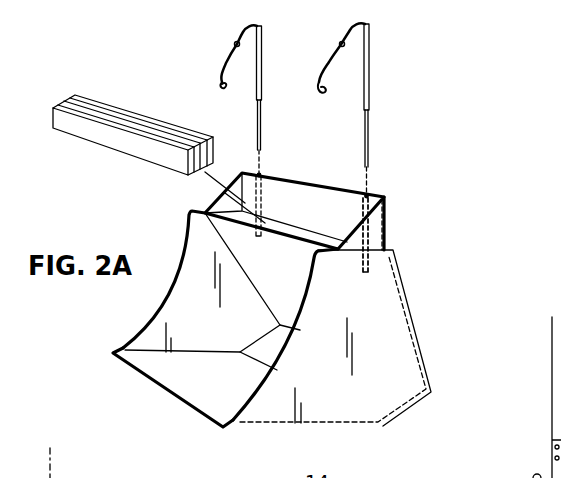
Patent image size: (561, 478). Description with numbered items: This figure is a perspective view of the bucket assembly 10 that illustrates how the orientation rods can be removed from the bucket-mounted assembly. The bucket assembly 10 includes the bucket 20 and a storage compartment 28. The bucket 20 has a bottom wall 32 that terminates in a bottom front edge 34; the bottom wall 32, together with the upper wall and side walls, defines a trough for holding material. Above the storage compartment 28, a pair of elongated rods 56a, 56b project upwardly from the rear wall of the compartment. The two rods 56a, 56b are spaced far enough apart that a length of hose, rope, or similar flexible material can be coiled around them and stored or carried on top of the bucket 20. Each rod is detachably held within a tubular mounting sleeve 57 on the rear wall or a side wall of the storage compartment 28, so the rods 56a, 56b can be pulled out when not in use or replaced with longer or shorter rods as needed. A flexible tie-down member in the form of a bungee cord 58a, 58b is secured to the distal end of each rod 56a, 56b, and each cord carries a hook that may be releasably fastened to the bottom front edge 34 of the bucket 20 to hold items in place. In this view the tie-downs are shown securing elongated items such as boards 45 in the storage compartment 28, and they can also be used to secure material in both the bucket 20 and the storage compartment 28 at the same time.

The bucket assembly 10 is at (139, 388).
The bucket 20 is at (408, 410).
The storage compartment 28 is at (300, 211).
The bottom wall 32 is at (200, 386).
The bottom front edge 34 is at (210, 415).
The boards 45 is at (107, 137).
The elongated rod 56a is at (265, 65).
The elongated rod 56b is at (372, 68).
The tubular mounting sleeve 57 is at (369, 231).
The bungee cord 58a is at (230, 51).
The bungee cord 58b is at (317, 70).